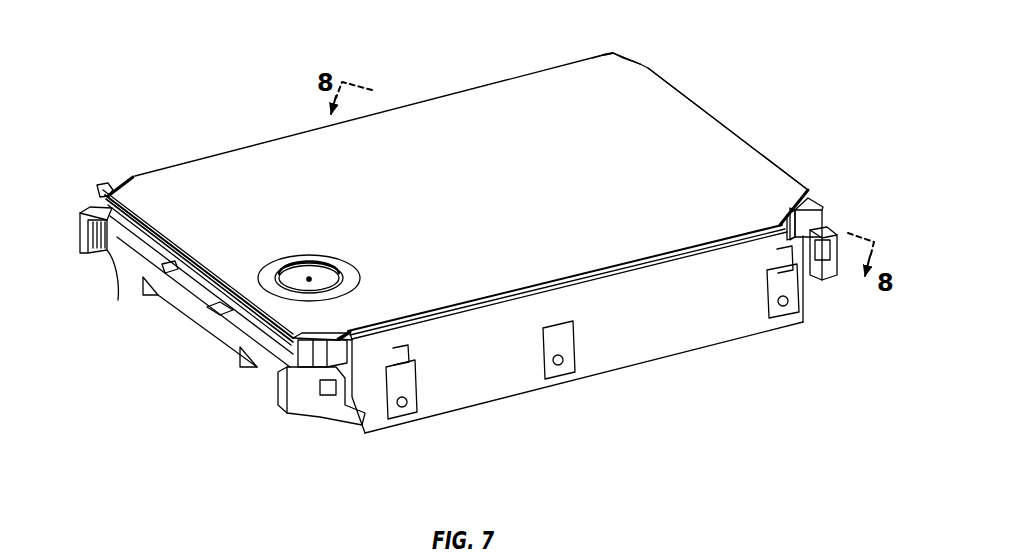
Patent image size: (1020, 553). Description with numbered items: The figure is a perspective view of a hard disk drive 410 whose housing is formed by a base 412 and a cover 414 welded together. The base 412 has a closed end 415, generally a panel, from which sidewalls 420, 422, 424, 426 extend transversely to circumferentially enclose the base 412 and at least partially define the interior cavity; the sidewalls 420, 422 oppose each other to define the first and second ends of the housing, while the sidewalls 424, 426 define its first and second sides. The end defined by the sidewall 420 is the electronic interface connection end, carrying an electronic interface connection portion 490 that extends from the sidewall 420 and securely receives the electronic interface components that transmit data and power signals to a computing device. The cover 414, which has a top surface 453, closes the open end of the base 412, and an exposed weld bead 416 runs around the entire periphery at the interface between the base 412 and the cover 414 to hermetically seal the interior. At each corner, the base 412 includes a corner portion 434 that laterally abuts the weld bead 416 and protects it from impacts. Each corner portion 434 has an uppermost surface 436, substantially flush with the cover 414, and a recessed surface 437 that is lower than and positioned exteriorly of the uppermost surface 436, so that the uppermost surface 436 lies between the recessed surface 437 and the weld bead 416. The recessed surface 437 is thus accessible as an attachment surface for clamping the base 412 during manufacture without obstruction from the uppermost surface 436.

The hard disk drive 410 is at (722, 66).
The base 412 is at (757, 343).
The cover 414 is at (452, 110).
The closed end 415 is at (505, 402).
The weld bead 416 is at (127, 170).
The sidewall 420 is at (253, 317).
The sidewall 422 is at (730, 127).
The sidewall 424 is at (597, 345).
The sidewall 426 is at (93, 200).
The corner portion 434 is at (612, 52).
The uppermost surface 436 is at (622, 60).
The recessed surface 437 is at (88, 207).
The top surface 453 is at (573, 88).
The electronic interface connection portion 490 is at (187, 304).